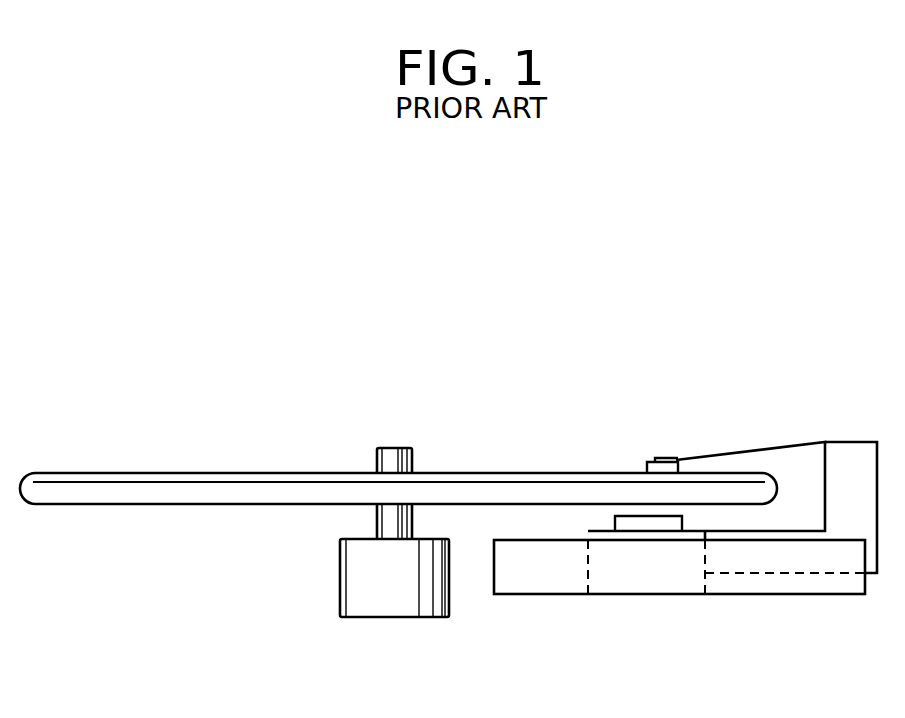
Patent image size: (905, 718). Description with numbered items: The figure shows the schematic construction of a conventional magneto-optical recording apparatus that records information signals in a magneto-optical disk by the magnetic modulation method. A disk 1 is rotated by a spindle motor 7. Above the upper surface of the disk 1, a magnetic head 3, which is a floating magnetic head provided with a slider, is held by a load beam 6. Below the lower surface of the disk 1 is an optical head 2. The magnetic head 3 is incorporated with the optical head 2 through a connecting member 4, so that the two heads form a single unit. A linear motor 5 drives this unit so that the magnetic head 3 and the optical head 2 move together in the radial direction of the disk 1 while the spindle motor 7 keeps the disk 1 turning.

The disk 1 is at (216, 473).
The optical head 2 is at (616, 520).
The magnetic head 3 is at (648, 462).
The connecting member 4 is at (843, 453).
The linear motor 5 is at (565, 582).
The load beam 6 is at (728, 453).
The spindle motor 7 is at (435, 617).